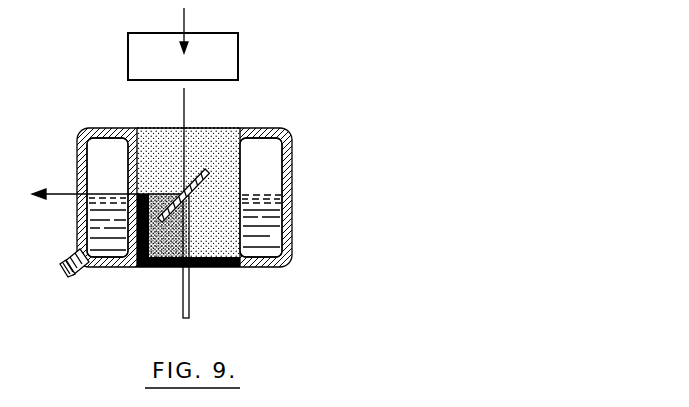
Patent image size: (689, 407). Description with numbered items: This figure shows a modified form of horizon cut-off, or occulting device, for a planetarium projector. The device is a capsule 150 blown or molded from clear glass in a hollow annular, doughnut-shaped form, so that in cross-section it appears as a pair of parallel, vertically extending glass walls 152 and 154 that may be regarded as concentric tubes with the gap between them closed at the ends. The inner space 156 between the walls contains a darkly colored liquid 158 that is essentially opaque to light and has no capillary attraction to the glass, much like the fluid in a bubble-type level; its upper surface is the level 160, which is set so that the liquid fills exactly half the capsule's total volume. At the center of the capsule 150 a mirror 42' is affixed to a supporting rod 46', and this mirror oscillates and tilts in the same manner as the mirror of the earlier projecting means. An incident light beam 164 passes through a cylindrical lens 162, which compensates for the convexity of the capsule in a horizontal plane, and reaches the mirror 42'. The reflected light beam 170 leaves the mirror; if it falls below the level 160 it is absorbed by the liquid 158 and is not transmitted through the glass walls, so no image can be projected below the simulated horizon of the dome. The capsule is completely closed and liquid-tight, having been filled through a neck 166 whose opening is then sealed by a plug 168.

The capsule 150 is at (307, 162).
The glass wall 152 is at (80, 218).
The glass wall 154 is at (148, 128).
The inner space 156 is at (276, 171).
The liquid 158 is at (268, 222).
The liquid level 160 is at (262, 196).
The cylindrical lens 162 is at (233, 53).
The incident light beam 164 is at (186, 108).
The neck 166 is at (92, 273).
The plug 168 is at (69, 276).
The reflected light beam 170 is at (61, 192).
The mirror 42' is at (191, 195).
The supporting rod 46' is at (168, 257).